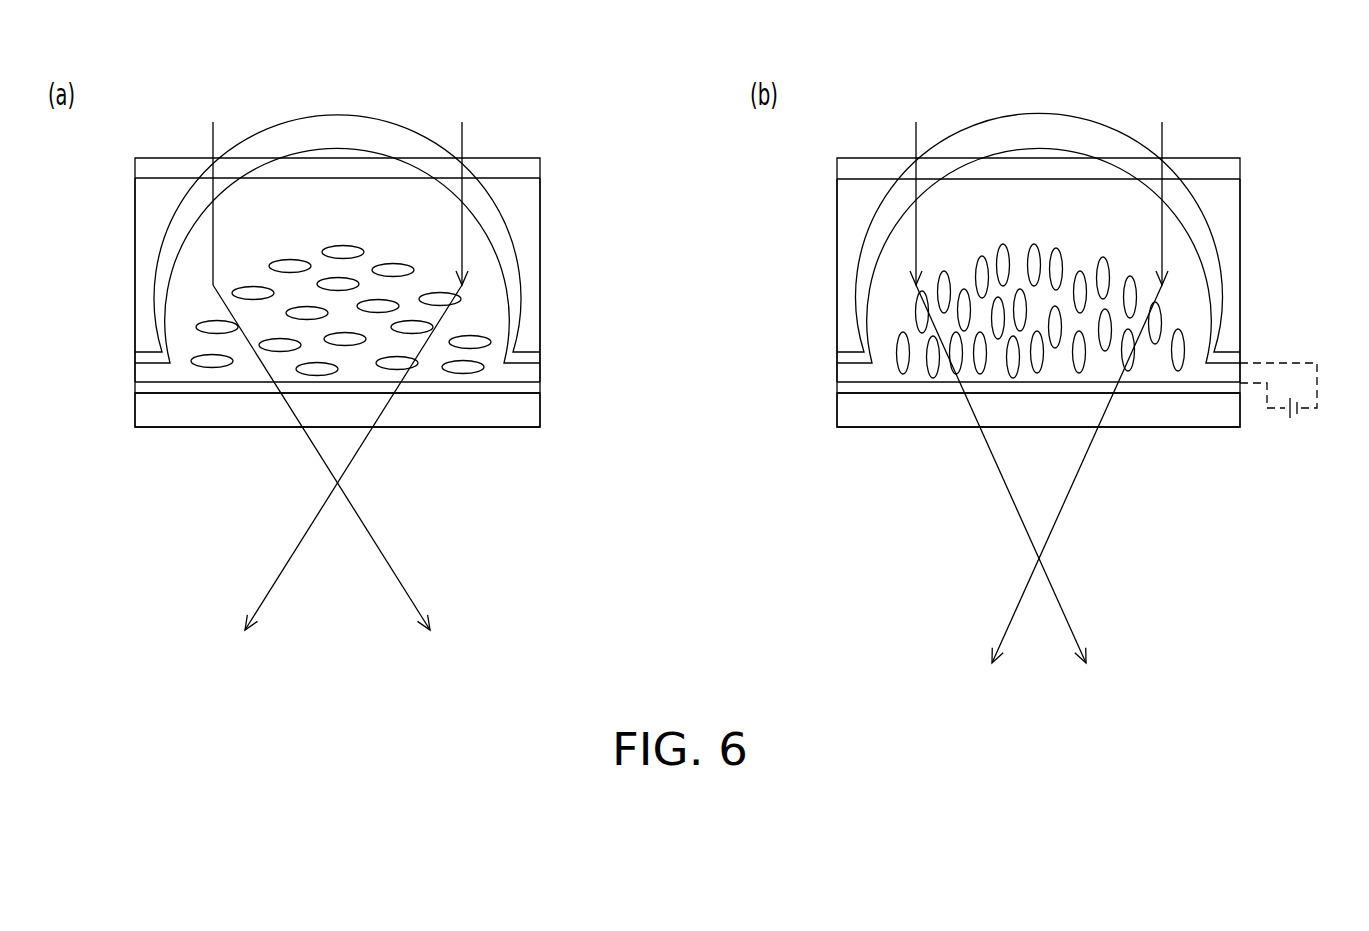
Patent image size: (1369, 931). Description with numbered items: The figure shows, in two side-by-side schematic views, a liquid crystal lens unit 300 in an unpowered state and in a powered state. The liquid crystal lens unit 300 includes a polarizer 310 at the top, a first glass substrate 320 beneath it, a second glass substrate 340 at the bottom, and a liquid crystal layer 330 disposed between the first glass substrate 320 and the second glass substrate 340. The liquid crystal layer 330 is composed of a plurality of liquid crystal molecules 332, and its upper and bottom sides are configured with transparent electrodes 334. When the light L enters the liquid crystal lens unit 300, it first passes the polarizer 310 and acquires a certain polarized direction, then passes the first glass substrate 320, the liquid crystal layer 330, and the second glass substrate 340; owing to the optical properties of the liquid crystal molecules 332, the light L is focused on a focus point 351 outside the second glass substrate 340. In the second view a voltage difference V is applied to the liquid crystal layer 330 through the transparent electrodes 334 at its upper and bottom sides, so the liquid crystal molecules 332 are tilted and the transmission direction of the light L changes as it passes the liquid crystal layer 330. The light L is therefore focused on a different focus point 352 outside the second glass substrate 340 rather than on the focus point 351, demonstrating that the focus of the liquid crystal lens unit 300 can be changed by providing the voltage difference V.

The liquid crystal lens unit 300 is at (657, 643).
The polarizer 310 is at (153, 167).
The first glass substrate 320 is at (165, 262).
The liquid crystal layer 330 is at (152, 374).
The liquid crystal molecules 332 is at (468, 341).
The transparent electrodes 334 is at (528, 358).
The second glass substrate 340 is at (163, 411).
The focus point 351 is at (346, 478).
The focus point 352 is at (1058, 555).
The light L is at (215, 143).
The voltage difference V is at (1293, 420).